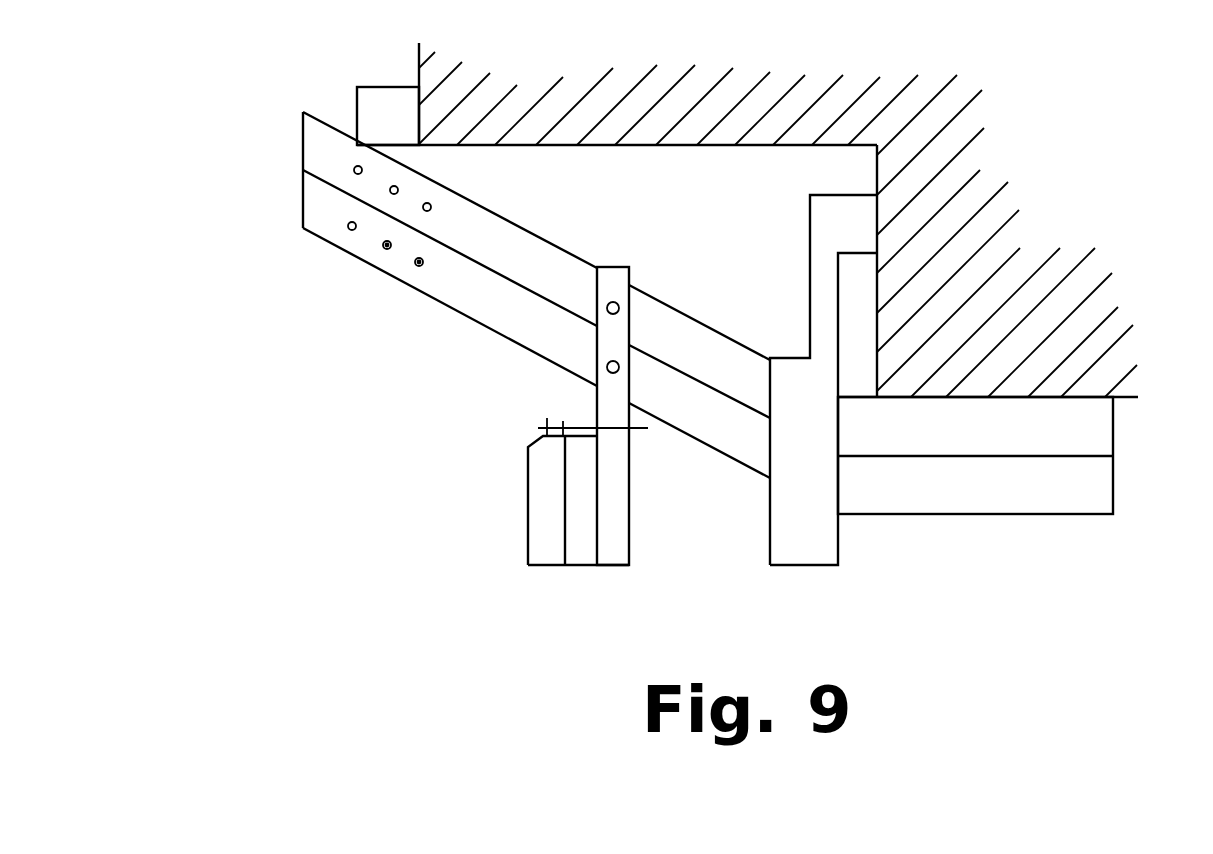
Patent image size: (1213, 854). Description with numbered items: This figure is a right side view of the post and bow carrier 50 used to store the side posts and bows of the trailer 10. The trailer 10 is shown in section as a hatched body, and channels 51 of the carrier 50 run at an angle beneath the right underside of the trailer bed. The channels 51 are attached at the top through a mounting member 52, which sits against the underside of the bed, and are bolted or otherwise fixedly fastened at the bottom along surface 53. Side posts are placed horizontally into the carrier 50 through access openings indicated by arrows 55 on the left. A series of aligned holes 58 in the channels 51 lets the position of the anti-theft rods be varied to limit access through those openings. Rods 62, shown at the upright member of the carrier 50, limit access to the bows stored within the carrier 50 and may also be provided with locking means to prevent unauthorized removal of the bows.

The trailer 10 is at (657, 118).
The carrier 50 is at (582, 380).
The channels 51 is at (472, 232).
The mounting member 52 is at (393, 113).
The surface 53 is at (1007, 398).
The access openings 55 is at (231, 146).
The aligned holes 58 is at (419, 266).
The rods 62 is at (582, 423).